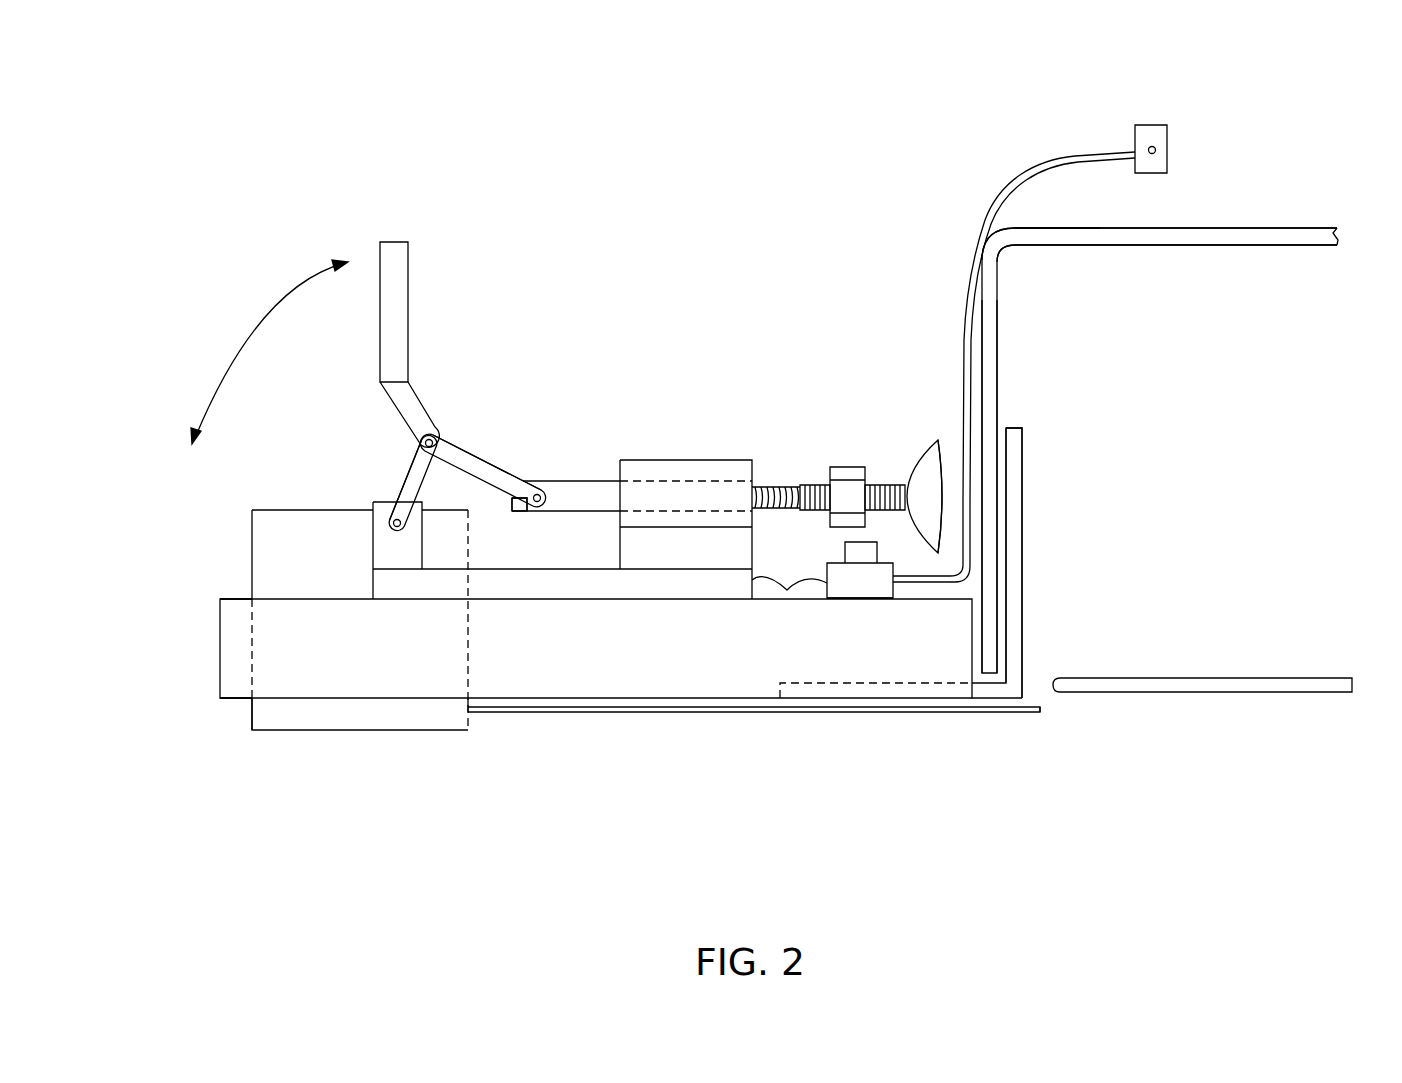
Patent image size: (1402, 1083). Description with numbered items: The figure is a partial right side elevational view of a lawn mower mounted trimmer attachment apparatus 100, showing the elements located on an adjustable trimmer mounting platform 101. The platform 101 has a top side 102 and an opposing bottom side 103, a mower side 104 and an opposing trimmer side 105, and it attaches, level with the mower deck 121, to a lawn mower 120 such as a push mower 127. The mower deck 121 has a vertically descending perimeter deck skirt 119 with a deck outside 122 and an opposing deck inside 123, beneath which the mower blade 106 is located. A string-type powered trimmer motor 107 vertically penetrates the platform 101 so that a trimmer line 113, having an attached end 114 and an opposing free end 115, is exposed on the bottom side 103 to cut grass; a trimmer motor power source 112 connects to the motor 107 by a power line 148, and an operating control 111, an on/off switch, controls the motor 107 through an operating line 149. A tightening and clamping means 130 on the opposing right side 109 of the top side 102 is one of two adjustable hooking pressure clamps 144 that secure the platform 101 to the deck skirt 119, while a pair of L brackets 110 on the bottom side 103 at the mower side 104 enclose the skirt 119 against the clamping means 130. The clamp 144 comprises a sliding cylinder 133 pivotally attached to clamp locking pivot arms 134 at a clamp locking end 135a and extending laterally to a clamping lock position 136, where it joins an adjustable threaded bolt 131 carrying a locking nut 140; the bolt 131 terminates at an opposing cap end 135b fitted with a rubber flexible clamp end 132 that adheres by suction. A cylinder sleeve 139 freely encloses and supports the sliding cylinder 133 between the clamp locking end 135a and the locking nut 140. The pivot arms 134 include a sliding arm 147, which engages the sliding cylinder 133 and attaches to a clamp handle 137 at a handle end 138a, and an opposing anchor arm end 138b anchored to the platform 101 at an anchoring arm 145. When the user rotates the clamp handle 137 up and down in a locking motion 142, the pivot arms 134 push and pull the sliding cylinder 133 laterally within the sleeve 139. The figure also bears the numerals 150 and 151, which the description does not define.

The lawn mower mounted trimmer attachment apparatus 100 is at (648, 188).
The adjustable trimmer mounting platform 101 is at (665, 680).
The top side 102 is at (230, 600).
The opposing bottom side 103 is at (243, 700).
The mower side 104 is at (975, 648).
The opposing trimmer side 105 is at (220, 656).
The mower blade 106 is at (1262, 668).
The string-type powered trimmer motor 107 is at (378, 733).
The opposing right side 109 is at (393, 665).
The L brackets 110 is at (1023, 556).
The operating control 111 is at (1157, 125).
The trimmer motor power source 112 is at (892, 600).
The trimmer line 113 is at (735, 712).
The attached end 114 is at (470, 716).
The opposing free end 115 is at (1040, 712).
The vertically descending perimeter deck skirt 119 is at (1000, 278).
The lawn mower 120 is at (1268, 380).
The mower deck 121 is at (1175, 228).
The deck outside 122 is at (1025, 228).
The opposing deck inside 123 is at (1258, 246).
The push mower 127 is at (1285, 430).
The tightening and clamping means 130 is at (500, 388).
The adjustable threaded bolt 131 is at (890, 482).
The flexible clamp end 132 is at (938, 440).
The sliding cylinder 133 is at (758, 484).
The clamp locking pivot arms 134 is at (490, 515).
The clamp locking end 135a is at (528, 512).
The opposing cap end 135b is at (940, 492).
The clamping lock position 136 is at (818, 513).
The clamp handle 137 is at (410, 272).
The handle end 138a is at (431, 432).
The opposing anchor arm end 138b is at (390, 523).
The cylinder sleeve 139 is at (658, 458).
The locking nut 140 is at (842, 465).
The locking motion 142 is at (243, 335).
The adjustable hooking pressure clamps 144 is at (500, 388).
The anchoring arm 145 is at (503, 527).
The sliding arm 147 is at (495, 470).
The power line 148 is at (790, 592).
The operating line 149 is at (1060, 160).
The cable segment 150 is at (877, 548).
The sensor 151 is at (880, 598).